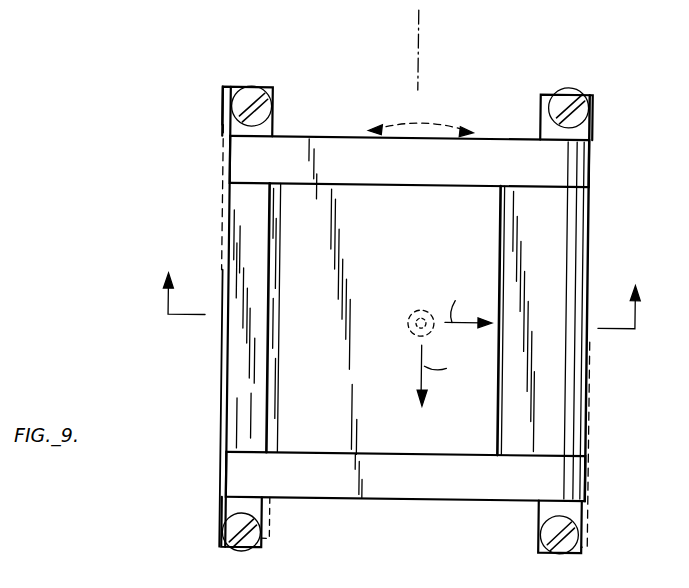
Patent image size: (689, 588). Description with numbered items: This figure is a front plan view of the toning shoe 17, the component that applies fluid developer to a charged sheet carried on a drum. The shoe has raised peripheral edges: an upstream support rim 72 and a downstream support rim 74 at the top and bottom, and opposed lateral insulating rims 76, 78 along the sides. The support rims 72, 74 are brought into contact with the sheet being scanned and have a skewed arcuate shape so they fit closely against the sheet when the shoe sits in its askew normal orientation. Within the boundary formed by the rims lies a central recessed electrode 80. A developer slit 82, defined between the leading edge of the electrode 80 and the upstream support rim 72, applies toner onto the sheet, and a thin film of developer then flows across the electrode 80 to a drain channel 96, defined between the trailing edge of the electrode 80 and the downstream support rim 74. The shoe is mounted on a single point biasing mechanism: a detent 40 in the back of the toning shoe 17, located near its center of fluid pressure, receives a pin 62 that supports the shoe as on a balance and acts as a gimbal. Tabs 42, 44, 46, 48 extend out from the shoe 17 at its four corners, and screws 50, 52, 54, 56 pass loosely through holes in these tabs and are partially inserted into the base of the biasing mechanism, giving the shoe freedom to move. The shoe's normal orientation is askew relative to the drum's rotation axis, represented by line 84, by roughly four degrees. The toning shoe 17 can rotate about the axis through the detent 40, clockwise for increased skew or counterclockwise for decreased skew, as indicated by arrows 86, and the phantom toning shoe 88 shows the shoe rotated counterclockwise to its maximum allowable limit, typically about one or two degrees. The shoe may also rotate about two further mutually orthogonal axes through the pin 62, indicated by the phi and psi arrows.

The toning shoe 17 is at (145, 192).
The detent 40 is at (425, 308).
The tab 42 is at (270, 130).
The tab 44 is at (548, 130).
The tab 46 is at (275, 508).
The tab 48 is at (548, 514).
The screw 50 is at (258, 92).
The screw 52 is at (566, 98).
The screw 54 is at (253, 542).
The screw 56 is at (565, 548).
The pin 62 is at (412, 331).
The upstream support rim 72 is at (557, 392).
The downstream support rim 74 is at (226, 367).
The lateral insulating rim 76 is at (345, 137).
The lateral insulating rim 78 is at (393, 488).
The central recessed electrode 80 is at (357, 195).
The developer slit 82 is at (498, 222).
The drum rotation axis 84 is at (418, 42).
The rotation arrows 86 is at (432, 126).
The phantom toning shoe 88 is at (221, 112).
The drain channel 96 is at (274, 400).